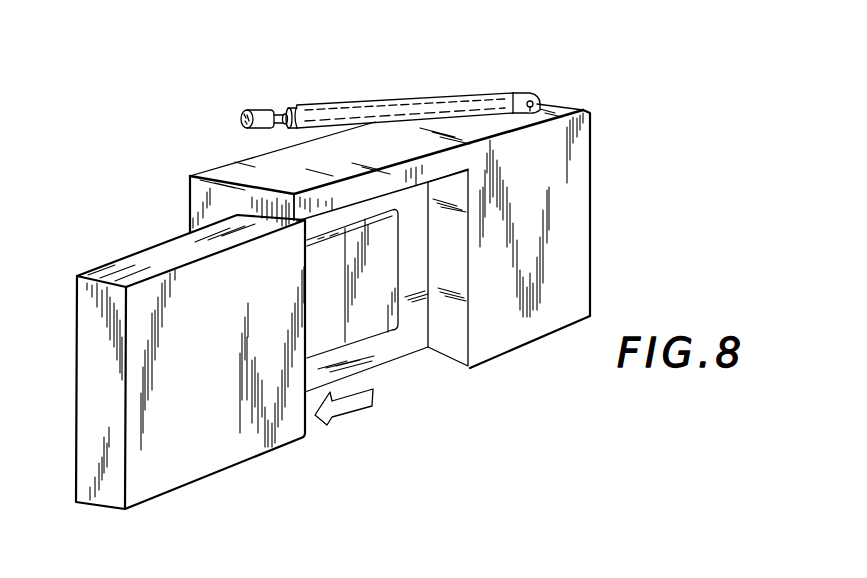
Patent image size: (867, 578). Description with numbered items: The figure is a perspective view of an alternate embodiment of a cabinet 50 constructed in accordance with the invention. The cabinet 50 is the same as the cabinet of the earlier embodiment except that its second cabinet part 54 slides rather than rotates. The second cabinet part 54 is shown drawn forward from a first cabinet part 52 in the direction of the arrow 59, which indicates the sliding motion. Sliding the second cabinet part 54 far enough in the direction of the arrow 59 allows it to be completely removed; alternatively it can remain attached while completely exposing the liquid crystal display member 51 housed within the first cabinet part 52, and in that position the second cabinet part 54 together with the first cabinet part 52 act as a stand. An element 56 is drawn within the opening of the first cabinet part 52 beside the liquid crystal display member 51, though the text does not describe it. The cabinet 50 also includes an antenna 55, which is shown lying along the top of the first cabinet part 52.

The cabinet 50 is at (120, 214).
The liquid crystal display member 51 is at (377, 317).
The first cabinet part 52 is at (531, 343).
The second cabinet part 54 is at (222, 455).
The antenna 55 is at (441, 95).
The side wall 56 is at (450, 350).
The arrow 59 is at (343, 410).